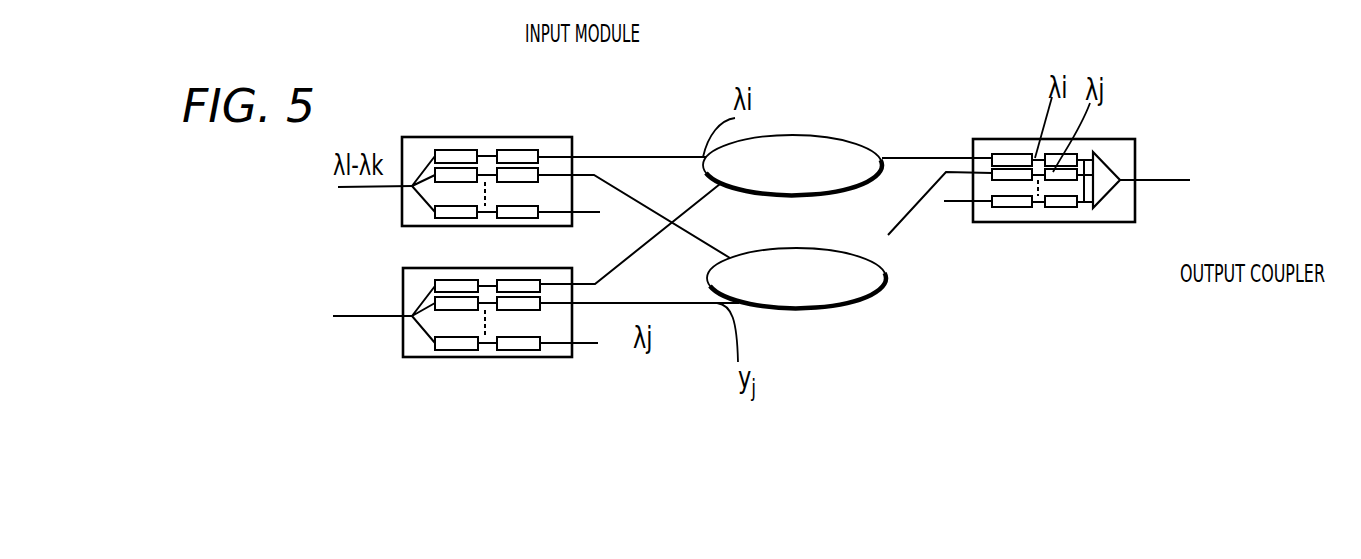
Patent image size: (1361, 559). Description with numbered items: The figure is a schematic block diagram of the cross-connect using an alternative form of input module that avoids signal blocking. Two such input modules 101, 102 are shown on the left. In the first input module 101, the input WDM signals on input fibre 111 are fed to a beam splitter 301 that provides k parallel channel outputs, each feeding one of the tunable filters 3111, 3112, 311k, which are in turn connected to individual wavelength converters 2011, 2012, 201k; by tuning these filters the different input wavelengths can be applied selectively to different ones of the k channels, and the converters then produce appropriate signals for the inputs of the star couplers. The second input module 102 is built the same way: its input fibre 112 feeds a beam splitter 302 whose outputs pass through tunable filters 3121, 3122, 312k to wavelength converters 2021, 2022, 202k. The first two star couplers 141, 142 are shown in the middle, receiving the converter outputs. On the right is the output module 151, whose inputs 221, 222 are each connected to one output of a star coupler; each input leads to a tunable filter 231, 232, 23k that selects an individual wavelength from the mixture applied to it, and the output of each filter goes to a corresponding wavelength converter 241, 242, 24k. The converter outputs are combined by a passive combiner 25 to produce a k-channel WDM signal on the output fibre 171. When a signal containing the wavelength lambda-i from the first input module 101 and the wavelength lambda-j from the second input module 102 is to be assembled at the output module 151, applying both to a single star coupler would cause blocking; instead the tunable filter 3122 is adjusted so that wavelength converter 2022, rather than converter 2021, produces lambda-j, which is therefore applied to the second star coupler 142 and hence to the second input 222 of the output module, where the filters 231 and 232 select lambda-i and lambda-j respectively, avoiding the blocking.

The input module 101 is at (514, 137).
The input module 102 is at (530, 268).
The input fibre 111 is at (362, 187).
The input fibre 112 is at (347, 317).
The beam splitter 301 is at (412, 185).
The beam splitter 302 is at (410, 317).
The tunable filter 3111 is at (452, 150).
The tunable filter 3112 is at (457, 172).
The tunable filter 311k is at (433, 218).
The tunable filter 3121 is at (435, 282).
The tunable filter 3122 is at (435, 301).
The tunable filter 312k is at (458, 350).
The wavelength converter 2011 is at (540, 149).
The wavelength converter 2012 is at (545, 162).
The wavelength converter 201k is at (540, 207).
The wavelength converter 2021 is at (605, 275).
The wavelength converter 2022 is at (572, 312).
The wavelength converter 202k is at (527, 350).
The star coupler 141 is at (807, 135).
The star coupler 142 is at (883, 313).
The input 221 is at (960, 160).
The input 222 is at (948, 172).
The output module 151 is at (1115, 223).
The tunable filter 231 is at (1003, 154).
The tunable filter 232 is at (975, 196).
The tunable filter 23k is at (1023, 208).
The wavelength converter 241 is at (1080, 155).
The wavelength converter 242 is at (1095, 183).
The wavelength converter 24k is at (1077, 208).
The passive combiner 25 is at (1110, 193).
The output fibre 171 is at (1183, 180).